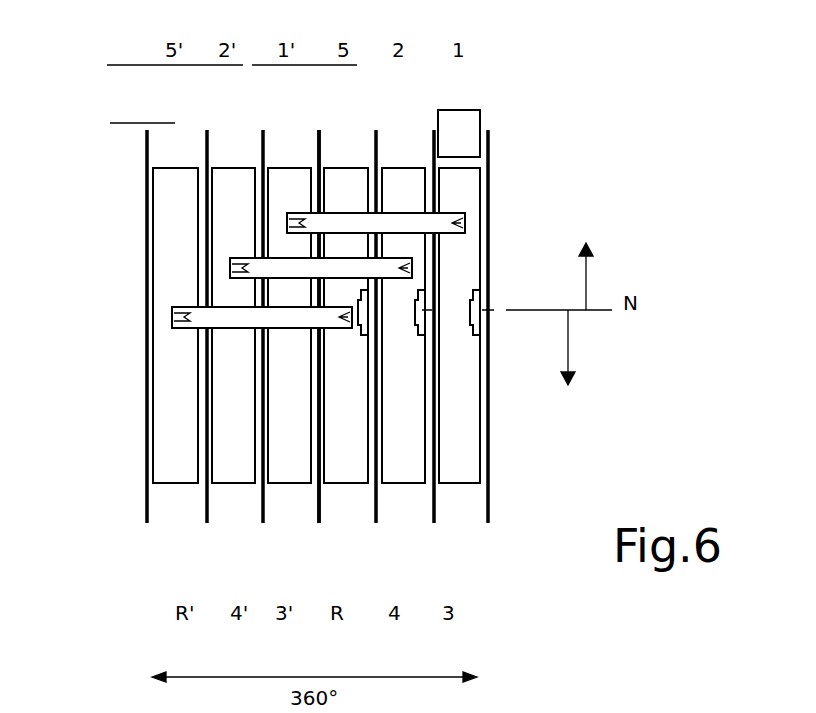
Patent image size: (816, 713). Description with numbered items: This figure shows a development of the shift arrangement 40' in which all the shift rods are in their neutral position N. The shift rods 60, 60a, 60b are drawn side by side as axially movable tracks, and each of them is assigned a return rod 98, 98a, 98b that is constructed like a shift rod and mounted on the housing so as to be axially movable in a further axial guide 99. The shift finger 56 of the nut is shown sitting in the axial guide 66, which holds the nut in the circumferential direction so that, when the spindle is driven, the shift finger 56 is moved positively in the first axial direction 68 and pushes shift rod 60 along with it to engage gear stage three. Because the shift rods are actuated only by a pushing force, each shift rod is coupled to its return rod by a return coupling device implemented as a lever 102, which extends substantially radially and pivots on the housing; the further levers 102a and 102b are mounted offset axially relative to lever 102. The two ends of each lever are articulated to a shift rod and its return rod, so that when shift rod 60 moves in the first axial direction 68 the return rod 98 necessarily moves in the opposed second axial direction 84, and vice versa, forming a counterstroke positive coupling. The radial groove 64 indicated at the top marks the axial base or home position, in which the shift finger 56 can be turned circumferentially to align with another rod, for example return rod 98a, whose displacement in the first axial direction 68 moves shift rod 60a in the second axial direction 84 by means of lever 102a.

The radial groove 64 is at (130, 102).
The shift finger 56 is at (452, 135).
The shift arrangement 40' is at (644, 102).
The lever 102 is at (403, 227).
The lever 102a is at (285, 270).
The lever 102b is at (230, 317).
The second axial direction 84 is at (586, 278).
The first axial direction 68 is at (570, 335).
The return rod 98b is at (172, 475).
The return rod 98a is at (230, 475).
The return rod 98 is at (287, 475).
The further axial guide 99 is at (316, 503).
The shift rod 60b is at (340, 473).
The shift rod 60a is at (403, 472).
The shift rod 60 is at (455, 472).
The axial guide 66 is at (473, 493).